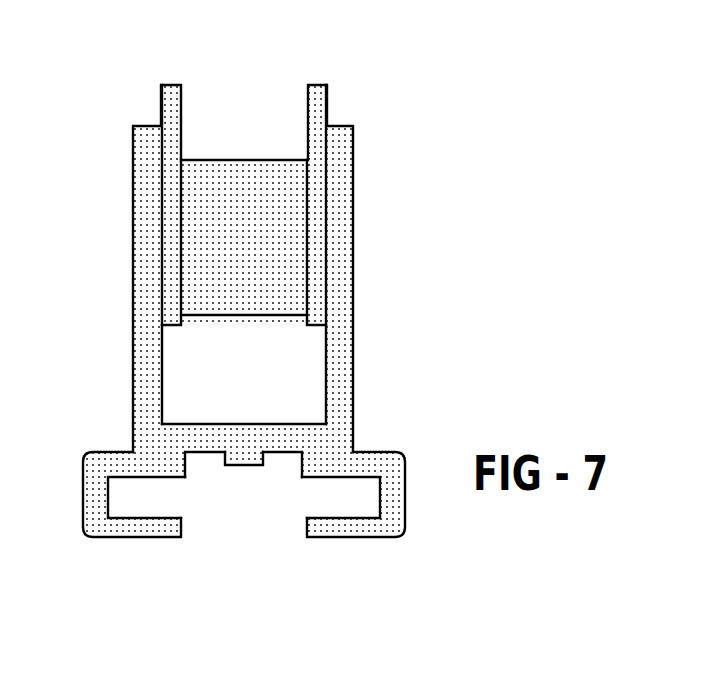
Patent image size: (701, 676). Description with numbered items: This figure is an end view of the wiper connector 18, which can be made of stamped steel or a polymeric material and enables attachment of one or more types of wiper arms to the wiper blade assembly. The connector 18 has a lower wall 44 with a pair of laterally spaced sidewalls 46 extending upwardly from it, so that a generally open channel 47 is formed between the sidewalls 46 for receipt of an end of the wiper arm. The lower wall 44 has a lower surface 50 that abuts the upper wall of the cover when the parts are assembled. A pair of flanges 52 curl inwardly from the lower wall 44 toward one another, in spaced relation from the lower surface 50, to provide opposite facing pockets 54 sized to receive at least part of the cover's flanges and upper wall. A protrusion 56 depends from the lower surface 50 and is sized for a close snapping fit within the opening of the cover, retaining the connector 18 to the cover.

The wiper connector 18 is at (355, 133).
The lower wall 44 is at (207, 423).
The sidewalls 46 is at (133, 170).
The open channel 47 is at (253, 117).
The lower surface 50 is at (205, 453).
The flanges 52 is at (150, 537).
The pockets 54 is at (108, 493).
The protrusion 56 is at (248, 467).